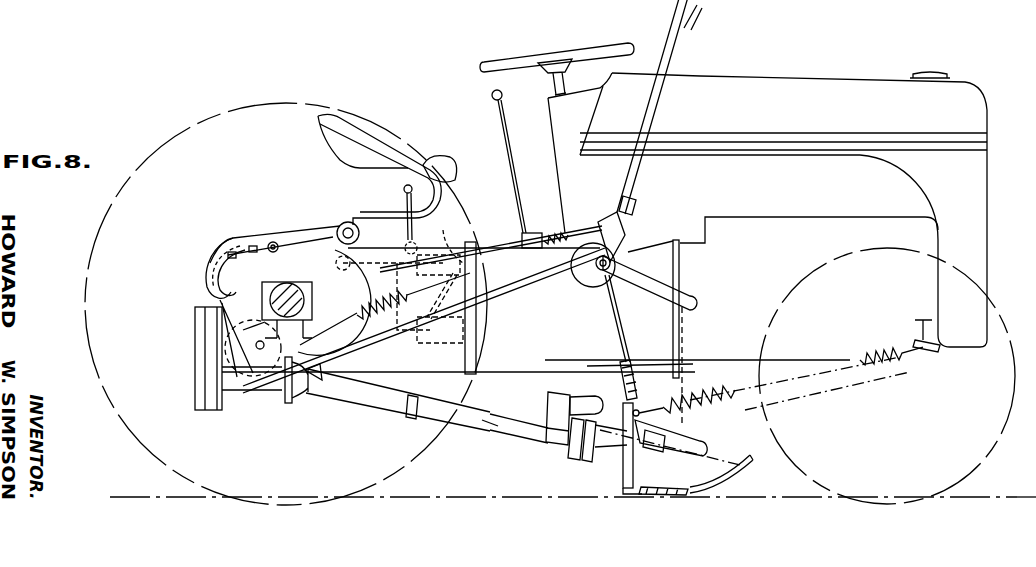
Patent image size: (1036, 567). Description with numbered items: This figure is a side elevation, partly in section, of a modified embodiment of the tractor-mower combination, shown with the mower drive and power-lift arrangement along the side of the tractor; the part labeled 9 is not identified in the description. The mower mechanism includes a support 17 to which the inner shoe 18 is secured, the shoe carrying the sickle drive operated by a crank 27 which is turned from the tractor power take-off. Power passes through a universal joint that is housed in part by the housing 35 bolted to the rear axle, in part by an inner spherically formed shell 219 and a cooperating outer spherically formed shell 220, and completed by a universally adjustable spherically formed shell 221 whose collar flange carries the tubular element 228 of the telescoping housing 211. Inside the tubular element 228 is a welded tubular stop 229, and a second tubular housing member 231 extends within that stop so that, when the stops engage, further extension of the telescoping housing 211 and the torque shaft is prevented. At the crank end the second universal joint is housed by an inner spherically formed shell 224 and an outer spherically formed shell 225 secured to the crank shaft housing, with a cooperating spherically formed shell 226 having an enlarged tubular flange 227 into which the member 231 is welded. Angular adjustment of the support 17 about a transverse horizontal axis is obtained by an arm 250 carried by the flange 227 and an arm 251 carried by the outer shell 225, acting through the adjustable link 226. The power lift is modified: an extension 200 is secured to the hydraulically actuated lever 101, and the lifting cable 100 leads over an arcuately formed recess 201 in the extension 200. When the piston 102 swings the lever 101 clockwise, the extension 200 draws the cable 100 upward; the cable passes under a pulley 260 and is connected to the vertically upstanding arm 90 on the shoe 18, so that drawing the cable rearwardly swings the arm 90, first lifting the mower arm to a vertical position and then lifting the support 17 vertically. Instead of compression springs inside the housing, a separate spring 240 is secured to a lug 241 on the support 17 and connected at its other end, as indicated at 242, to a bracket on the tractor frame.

The inner spherically formed shell 219 is at (55, 13).
The inner spherically formed shell 224 is at (968, 11).
The universally adjustable spherically formed shell 221 is at (305, 378).
The hydraulically actuated lever 101 is at (302, 240).
The extension 200 is at (226, 268).
The arcuately formed recess 201 is at (205, 286).
The piston 102 is at (433, 224).
The lifting cable 100 is at (522, 270).
The pulley 260 is at (640, 345).
The spherically formed shell / adjustable link 226 is at (583, 400).
The housing 35 is at (262, 393).
The flange 9 is at (293, 396).
The outer spherically formed shell 220 is at (290, 407).
The tubular element 228 is at (350, 400).
The tubular stop 229 is at (412, 411).
The housing 211 is at (468, 436).
The second tubular housing member 231 is at (490, 426).
The arm 250 is at (557, 412).
The enlarged tubular flange 227 is at (548, 440).
The arm 251 is at (595, 417).
The outer spherically formed shell 225 is at (587, 447).
The vertically upstanding arm 90 is at (627, 458).
The lug 241 is at (640, 410).
The support 17 is at (698, 440).
The crank 27 is at (663, 481).
The inner shoe 18 is at (725, 485).
The spring 240 is at (873, 367).
The spring connection 242 is at (928, 358).